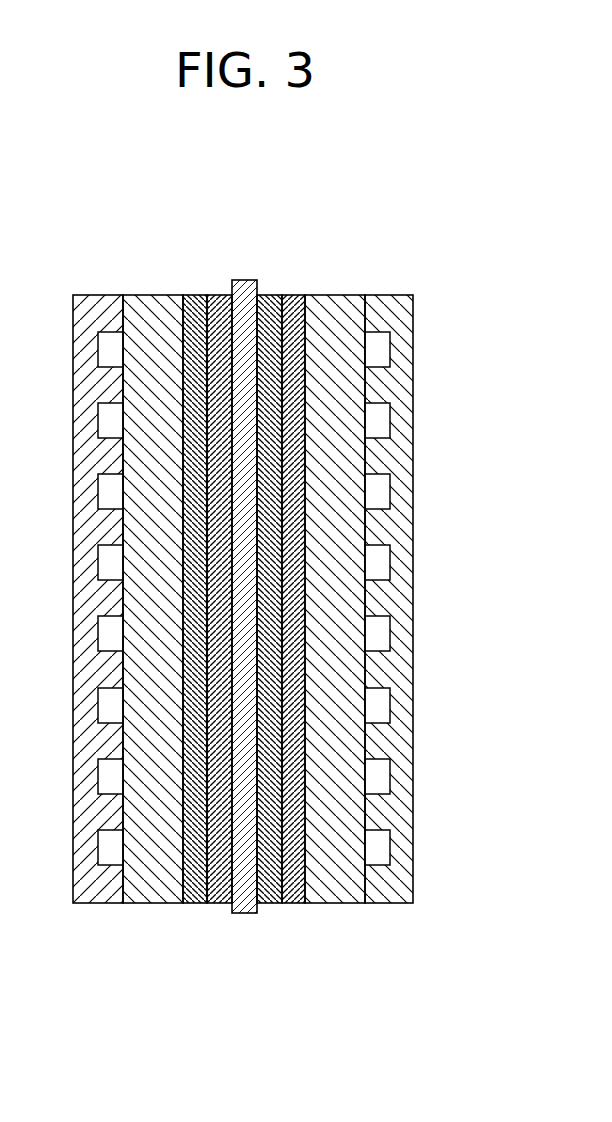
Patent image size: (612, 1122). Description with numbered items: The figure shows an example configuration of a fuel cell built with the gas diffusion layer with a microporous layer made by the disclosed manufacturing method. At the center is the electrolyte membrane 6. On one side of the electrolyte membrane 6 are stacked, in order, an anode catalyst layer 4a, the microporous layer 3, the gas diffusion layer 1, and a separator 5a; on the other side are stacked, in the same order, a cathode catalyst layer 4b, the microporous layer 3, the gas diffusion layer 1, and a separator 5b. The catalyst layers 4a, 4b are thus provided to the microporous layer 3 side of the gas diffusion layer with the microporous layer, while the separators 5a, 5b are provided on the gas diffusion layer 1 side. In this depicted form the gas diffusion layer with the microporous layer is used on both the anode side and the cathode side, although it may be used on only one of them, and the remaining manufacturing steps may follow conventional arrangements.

The gas diffusion layer 1 is at (146, 300).
The microporous layer 3 is at (190, 300).
The anode catalyst layer 4a is at (225, 903).
The cathode catalyst layer 4b is at (270, 903).
The separator 5a is at (105, 903).
The separator 5b is at (393, 903).
The electrolyte membrane 6 is at (243, 290).